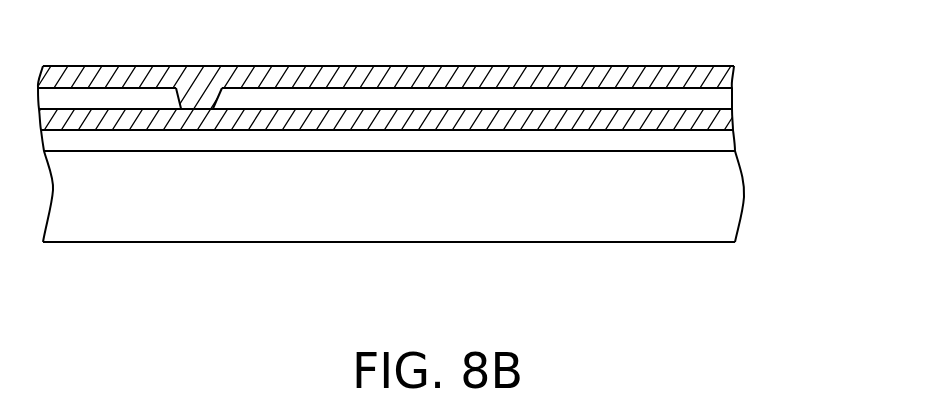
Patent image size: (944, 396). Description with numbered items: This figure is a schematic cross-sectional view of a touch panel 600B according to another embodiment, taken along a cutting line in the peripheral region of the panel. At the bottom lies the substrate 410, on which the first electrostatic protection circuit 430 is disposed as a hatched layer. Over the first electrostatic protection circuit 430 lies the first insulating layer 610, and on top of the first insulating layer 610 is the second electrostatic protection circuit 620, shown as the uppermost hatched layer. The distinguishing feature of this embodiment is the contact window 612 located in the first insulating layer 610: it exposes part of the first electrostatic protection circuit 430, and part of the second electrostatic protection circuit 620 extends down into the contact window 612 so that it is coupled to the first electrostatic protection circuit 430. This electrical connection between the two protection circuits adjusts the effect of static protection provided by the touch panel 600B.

The touch panel 600B is at (735, 303).
The second electrostatic protection circuit 620 is at (733, 78).
The contact window 612 is at (176, 97).
The first insulating layer 610 is at (722, 100).
The first electrostatic protection circuit 430 is at (728, 120).
The substrate 410 is at (733, 205).